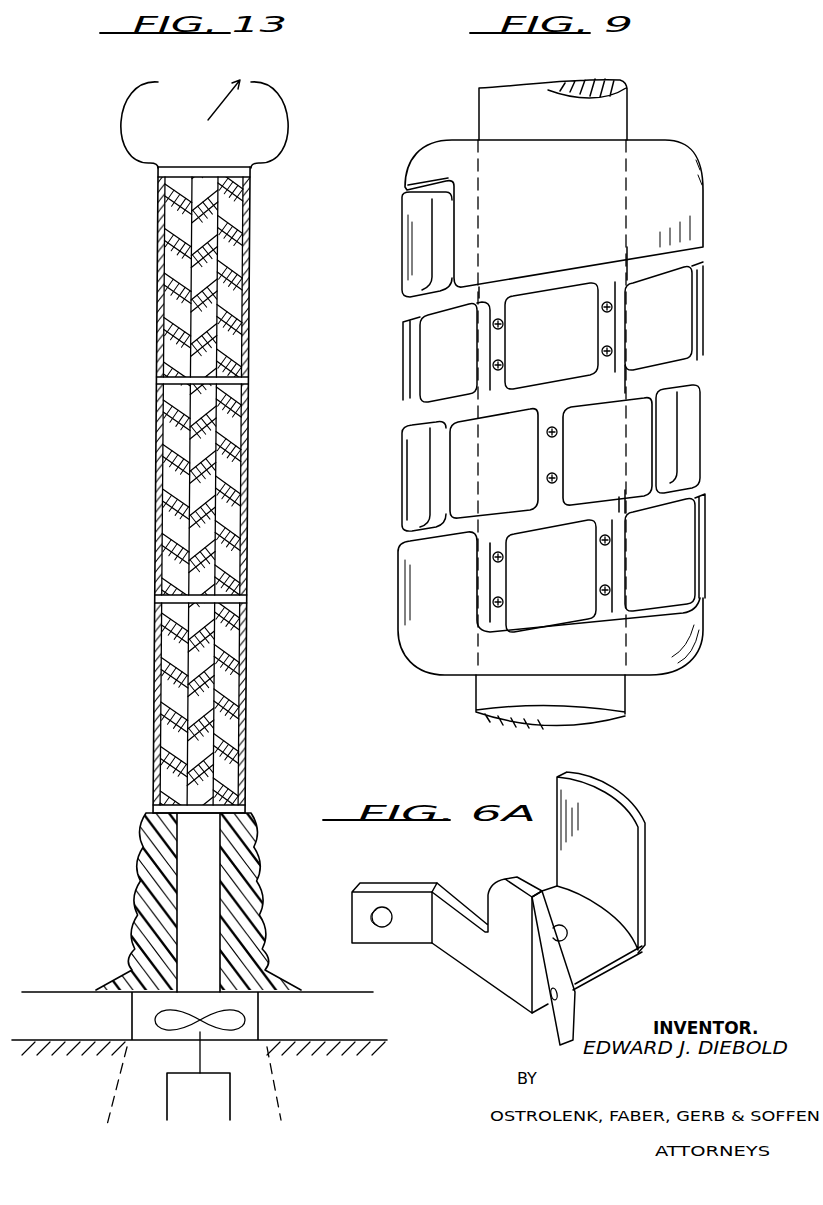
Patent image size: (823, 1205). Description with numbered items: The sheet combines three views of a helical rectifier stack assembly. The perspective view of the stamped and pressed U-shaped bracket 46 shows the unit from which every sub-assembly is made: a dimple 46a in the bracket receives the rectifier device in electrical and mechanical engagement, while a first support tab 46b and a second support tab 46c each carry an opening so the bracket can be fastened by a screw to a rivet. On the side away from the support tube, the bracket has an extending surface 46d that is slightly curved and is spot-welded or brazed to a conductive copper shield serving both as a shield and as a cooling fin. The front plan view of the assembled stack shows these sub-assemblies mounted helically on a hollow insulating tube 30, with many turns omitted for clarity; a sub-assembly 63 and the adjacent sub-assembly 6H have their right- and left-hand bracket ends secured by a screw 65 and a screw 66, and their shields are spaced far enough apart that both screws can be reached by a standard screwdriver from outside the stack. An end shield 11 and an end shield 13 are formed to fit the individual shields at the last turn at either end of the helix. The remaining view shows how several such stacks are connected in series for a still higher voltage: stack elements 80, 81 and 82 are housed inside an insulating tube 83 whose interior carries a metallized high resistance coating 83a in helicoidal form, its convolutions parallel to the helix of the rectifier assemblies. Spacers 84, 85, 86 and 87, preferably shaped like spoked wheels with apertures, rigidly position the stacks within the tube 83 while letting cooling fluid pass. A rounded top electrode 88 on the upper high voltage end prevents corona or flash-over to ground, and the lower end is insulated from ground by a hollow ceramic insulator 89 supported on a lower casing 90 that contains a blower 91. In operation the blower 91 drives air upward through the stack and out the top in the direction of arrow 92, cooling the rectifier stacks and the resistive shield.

In FIG. 9, the end shield 11 is at (688, 209).
In FIG. 9, the end shield 13 is at (696, 635).
In FIG. 9, the hollow insulating tube 30 is at (616, 120).
In FIG. 9, the sub-assembly 63 is at (514, 471).
In FIG. 9, the screw 65 is at (557, 437).
In FIG. 9, the screw 66 is at (557, 479).
In FIG. 9, the panel 6H is at (612, 464).
In FIG. 6A, the U-shaped bracket 46 is at (527, 908).
In FIG. 6A, the dimple 46a is at (568, 936).
In FIG. 6A, the first support tab 46b is at (576, 1005).
In FIG. 6A, the second support tab 46c is at (398, 888).
In FIG. 6A, the extending surface 46d is at (627, 797).
In FIG. 13, the stack element 80 is at (205, 260).
In FIG. 13, the stack element 81 is at (200, 481).
In FIG. 13, the stack element 82 is at (200, 700).
In FIG. 13, the insulating tube 83 is at (157, 349).
In FIG. 13, the metallized high resistance coating 83a is at (172, 309).
In FIG. 13, the spacer 84 is at (158, 170).
In FIG. 13, the spacer 85 is at (157, 381).
In FIG. 13, the spacer 86 is at (157, 597).
In FIG. 13, the spacer 87 is at (158, 805).
In FIG. 13, the rounded top electrode 88 is at (118, 120).
In FIG. 13, the ceramic insulator 89 is at (146, 899).
In FIG. 13, the lower casing 90 is at (132, 1040).
In FIG. 13, the blower 91 is at (178, 1093).
In FIG. 13, the arrow 92 is at (238, 88).